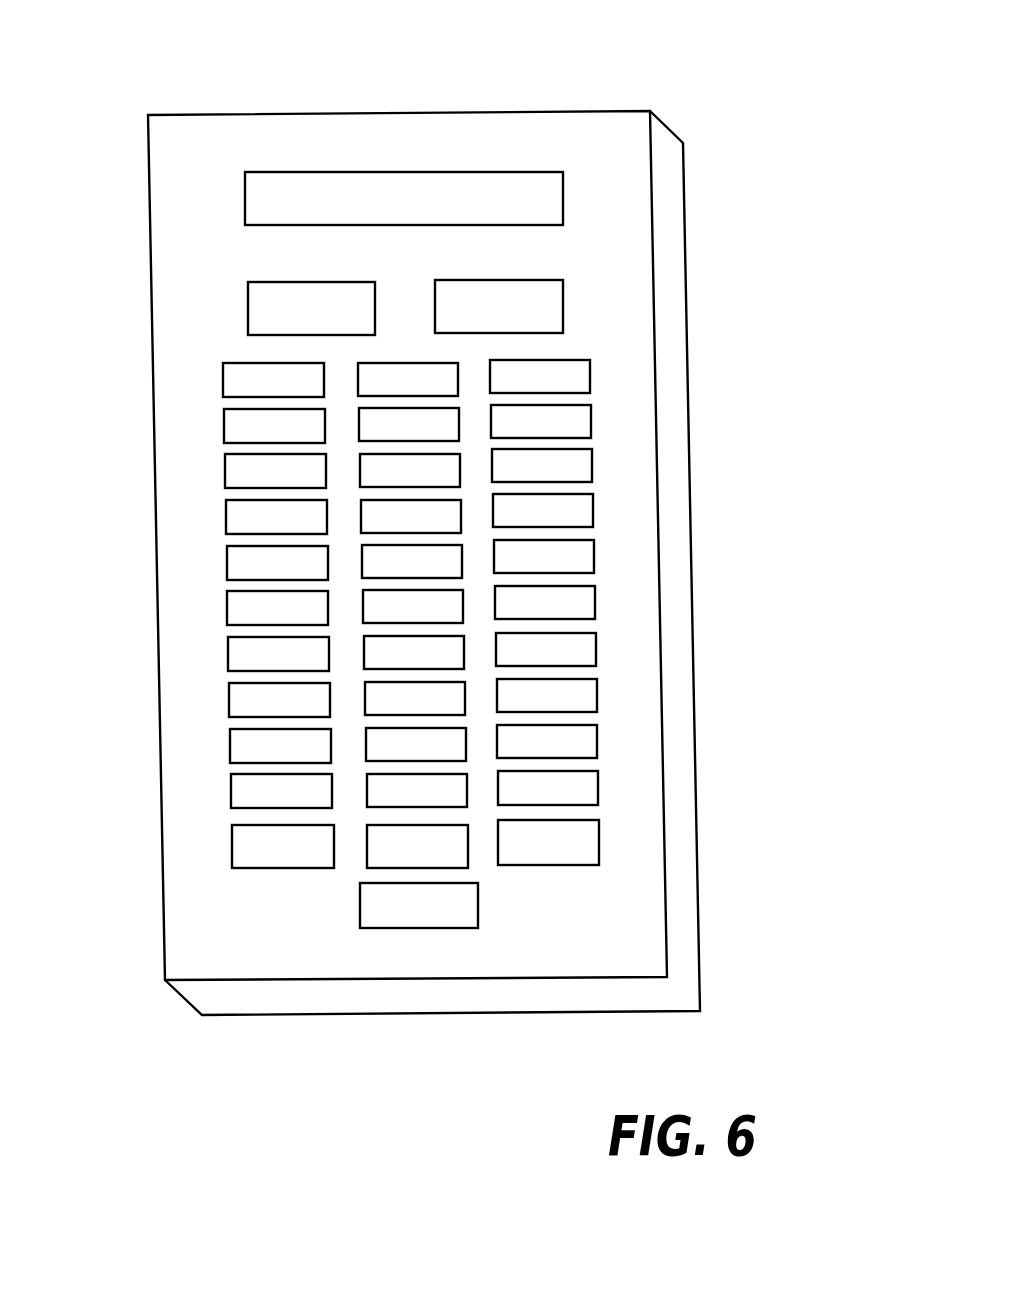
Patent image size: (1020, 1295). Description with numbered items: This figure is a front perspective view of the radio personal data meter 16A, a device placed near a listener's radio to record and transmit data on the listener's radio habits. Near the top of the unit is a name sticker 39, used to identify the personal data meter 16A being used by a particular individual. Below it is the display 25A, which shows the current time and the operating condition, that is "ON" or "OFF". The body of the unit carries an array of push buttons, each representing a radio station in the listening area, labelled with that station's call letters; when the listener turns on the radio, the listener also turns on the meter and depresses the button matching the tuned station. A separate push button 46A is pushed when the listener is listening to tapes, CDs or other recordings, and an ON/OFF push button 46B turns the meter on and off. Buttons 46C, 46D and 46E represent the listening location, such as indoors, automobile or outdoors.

The personal data meter 16A is at (424, 514).
The name sticker 39 is at (563, 198).
The display 25A is at (375, 290).
The push button 46A is at (598, 739).
The ON/OFF push button 46B is at (417, 928).
The button 46C is at (232, 847).
The button 46D is at (367, 860).
The button 46E is at (600, 838).